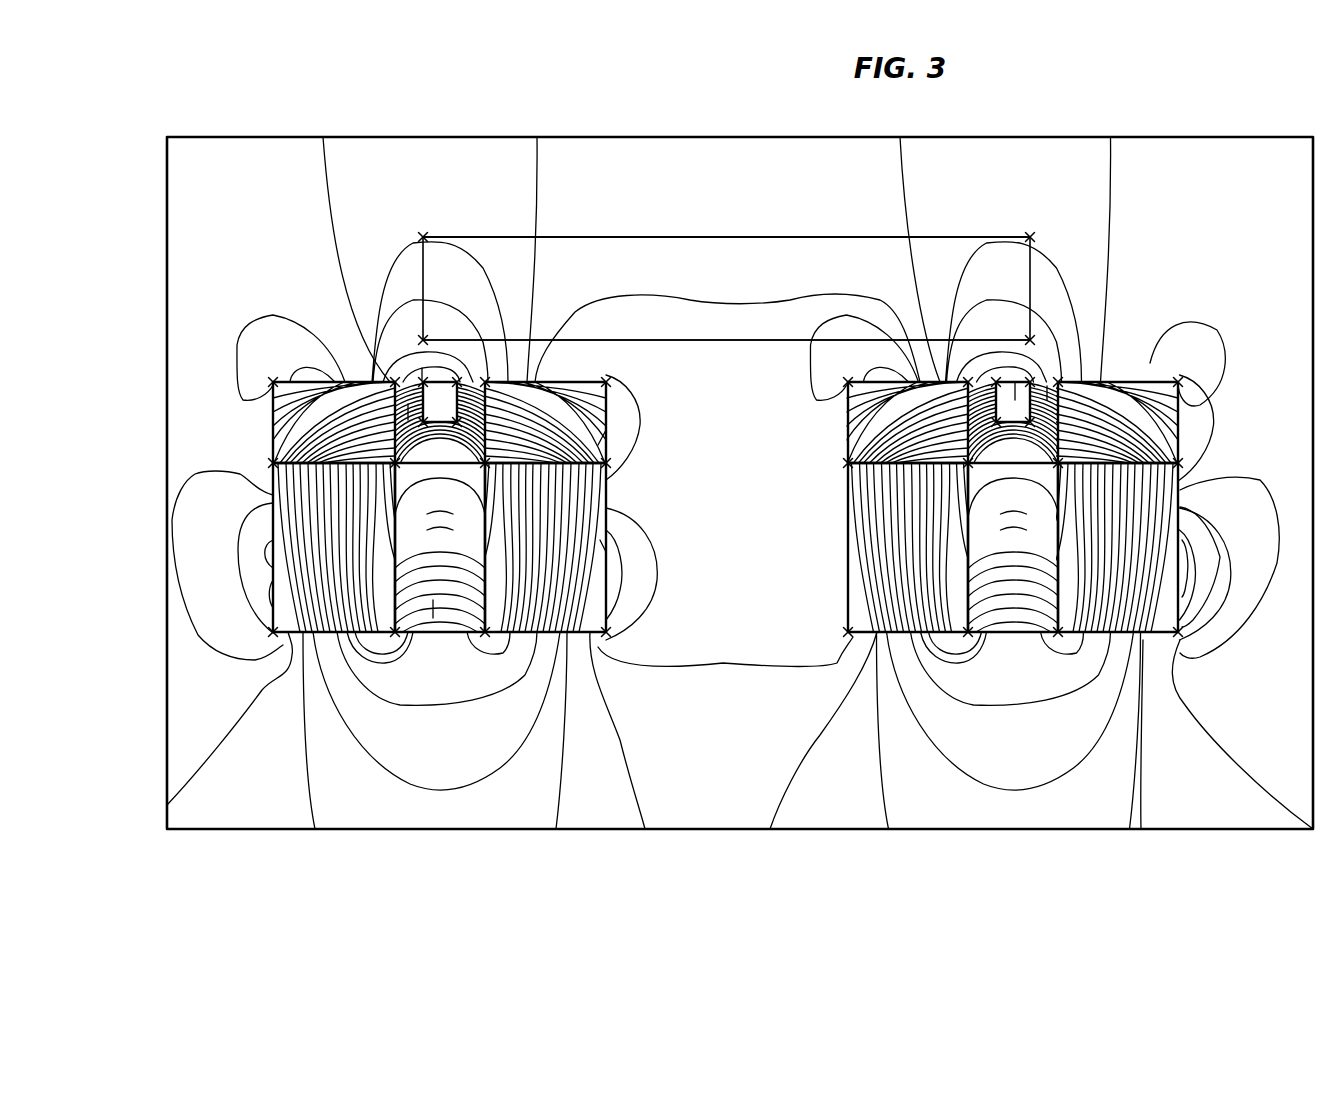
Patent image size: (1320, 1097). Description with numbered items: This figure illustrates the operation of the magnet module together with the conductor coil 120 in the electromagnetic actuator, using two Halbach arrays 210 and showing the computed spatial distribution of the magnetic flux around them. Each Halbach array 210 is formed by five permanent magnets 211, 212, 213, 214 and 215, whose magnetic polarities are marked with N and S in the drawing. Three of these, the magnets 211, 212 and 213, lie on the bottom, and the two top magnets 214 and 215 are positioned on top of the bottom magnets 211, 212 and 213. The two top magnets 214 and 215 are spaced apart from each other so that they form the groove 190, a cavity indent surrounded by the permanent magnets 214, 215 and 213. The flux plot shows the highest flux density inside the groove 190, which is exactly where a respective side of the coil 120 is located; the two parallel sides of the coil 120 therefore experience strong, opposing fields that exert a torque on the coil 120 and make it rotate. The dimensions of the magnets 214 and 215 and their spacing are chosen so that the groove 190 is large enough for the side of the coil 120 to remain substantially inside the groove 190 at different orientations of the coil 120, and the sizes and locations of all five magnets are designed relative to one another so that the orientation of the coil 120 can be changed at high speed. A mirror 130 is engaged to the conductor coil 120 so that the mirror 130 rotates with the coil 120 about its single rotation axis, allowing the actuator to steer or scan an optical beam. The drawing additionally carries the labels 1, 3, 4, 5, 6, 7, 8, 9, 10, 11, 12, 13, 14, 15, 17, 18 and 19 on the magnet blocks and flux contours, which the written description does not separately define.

The magnetic return plate 1 is at (727, 289).
The central magnet 3 is at (1014, 480).
The upper side magnet 4 is at (908, 423).
The upper side magnet 5 is at (1118, 423).
The lower central magnet 6 is at (1015, 550).
The lower side magnet 7 is at (908, 550).
The lower side magnet 8 is at (1119, 550).
The central magnet 9 is at (440, 480).
The upper side magnet 10 is at (546, 423).
The upper side magnet 11 is at (334, 423).
The lower central magnet 12 is at (442, 550).
The lower side magnet 13 is at (767, 582).
The lower side magnet 14 is at (364, 628).
The upper surface of return plate 15 is at (726, 224).
The magnetic field line 17 is at (740, 546).
The magnetic field line 18 is at (740, 484).
The magnetic field line 19 is at (738, 574).
The conductor coil 120 is at (408, 394).
The mirror 130 is at (645, 228).
The groove 190 is at (416, 352).
The Halbach array 210 is at (330, 642).
The permanent magnet 211 is at (276, 565).
The permanent magnet 212 is at (592, 548).
The permanent magnet 213 is at (433, 618).
The permanent magnet 214 is at (275, 455).
The permanent magnet 215 is at (598, 440).